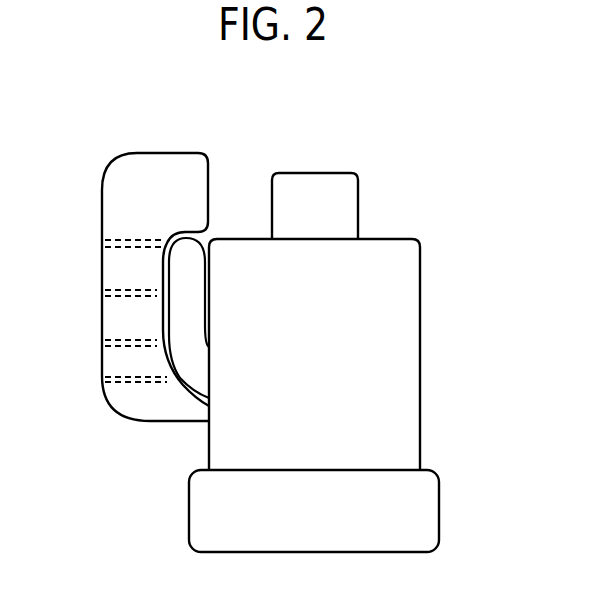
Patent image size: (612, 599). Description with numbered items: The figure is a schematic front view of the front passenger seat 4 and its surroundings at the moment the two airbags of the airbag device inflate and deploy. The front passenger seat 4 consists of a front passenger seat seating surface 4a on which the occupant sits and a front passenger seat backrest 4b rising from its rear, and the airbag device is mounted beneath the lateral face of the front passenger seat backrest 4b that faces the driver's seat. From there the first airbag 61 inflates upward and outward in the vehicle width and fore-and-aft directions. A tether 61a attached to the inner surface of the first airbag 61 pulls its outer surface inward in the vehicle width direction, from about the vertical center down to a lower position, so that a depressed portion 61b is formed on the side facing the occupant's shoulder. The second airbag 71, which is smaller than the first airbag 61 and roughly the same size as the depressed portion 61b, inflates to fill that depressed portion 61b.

The front passenger seat 4 is at (355, 362).
The front passenger seat seating surface 4a is at (422, 507).
The front passenger seat backrest 4b is at (400, 366).
The first airbag 61 is at (158, 168).
The tether 61a is at (125, 240).
The depressed portion 61b is at (160, 272).
The second airbag 71 is at (185, 320).